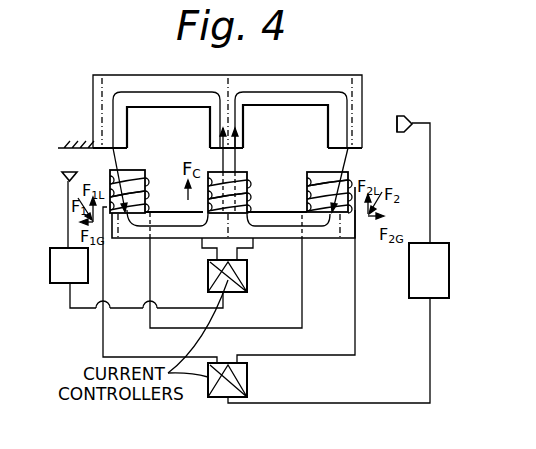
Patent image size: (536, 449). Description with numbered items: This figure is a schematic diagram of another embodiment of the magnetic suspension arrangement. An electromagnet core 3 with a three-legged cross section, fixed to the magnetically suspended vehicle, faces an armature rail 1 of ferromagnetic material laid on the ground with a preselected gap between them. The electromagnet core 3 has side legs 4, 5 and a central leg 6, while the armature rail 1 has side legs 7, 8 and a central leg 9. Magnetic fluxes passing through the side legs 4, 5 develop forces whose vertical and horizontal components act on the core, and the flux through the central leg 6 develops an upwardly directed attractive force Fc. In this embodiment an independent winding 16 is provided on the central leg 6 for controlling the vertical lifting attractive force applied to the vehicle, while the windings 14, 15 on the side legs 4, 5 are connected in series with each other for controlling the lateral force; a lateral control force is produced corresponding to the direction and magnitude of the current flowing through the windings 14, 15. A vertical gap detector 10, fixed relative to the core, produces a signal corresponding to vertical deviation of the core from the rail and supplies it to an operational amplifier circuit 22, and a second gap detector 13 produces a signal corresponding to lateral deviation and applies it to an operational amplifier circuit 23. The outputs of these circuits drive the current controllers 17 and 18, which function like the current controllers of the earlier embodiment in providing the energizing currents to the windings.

The armature rail 1 is at (312, 75).
The electromagnet core 3 is at (310, 238).
The side leg 4 is at (145, 172).
The side leg 5 is at (348, 172).
The central leg 6 is at (246, 173).
The side leg 7 is at (127, 124).
The side leg 8 is at (362, 96).
The central leg 9 is at (244, 124).
The vertical gap detector 10 is at (60, 176).
The second gap detector 13 is at (405, 115).
The winding 14 is at (149, 194).
The winding 15 is at (305, 180).
The independent winding 16 is at (250, 196).
The current controller 17 is at (237, 300).
The current controller 18 is at (247, 378).
The operational amplifier circuit 22 is at (55, 285).
The operational amplifier circuit 23 is at (449, 262).